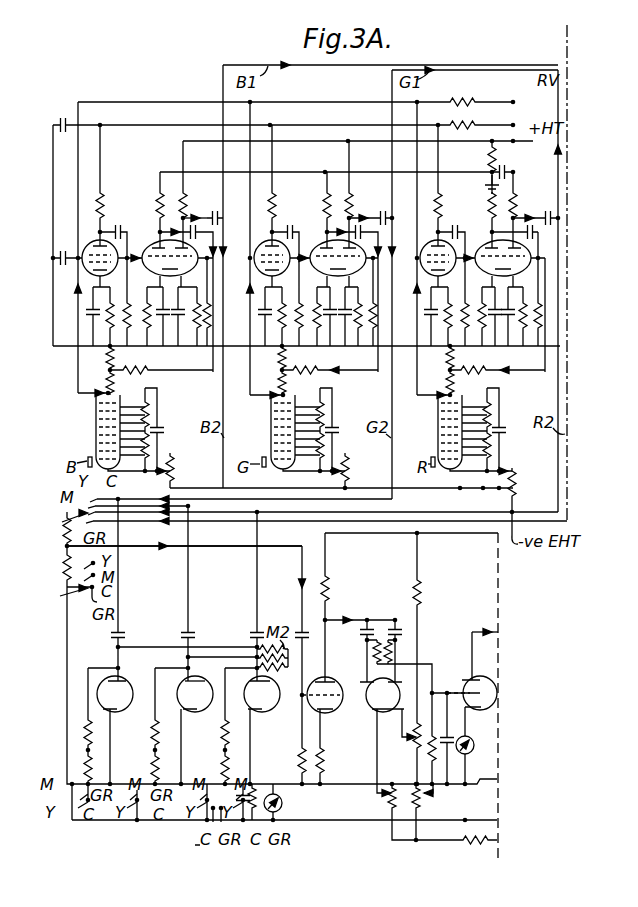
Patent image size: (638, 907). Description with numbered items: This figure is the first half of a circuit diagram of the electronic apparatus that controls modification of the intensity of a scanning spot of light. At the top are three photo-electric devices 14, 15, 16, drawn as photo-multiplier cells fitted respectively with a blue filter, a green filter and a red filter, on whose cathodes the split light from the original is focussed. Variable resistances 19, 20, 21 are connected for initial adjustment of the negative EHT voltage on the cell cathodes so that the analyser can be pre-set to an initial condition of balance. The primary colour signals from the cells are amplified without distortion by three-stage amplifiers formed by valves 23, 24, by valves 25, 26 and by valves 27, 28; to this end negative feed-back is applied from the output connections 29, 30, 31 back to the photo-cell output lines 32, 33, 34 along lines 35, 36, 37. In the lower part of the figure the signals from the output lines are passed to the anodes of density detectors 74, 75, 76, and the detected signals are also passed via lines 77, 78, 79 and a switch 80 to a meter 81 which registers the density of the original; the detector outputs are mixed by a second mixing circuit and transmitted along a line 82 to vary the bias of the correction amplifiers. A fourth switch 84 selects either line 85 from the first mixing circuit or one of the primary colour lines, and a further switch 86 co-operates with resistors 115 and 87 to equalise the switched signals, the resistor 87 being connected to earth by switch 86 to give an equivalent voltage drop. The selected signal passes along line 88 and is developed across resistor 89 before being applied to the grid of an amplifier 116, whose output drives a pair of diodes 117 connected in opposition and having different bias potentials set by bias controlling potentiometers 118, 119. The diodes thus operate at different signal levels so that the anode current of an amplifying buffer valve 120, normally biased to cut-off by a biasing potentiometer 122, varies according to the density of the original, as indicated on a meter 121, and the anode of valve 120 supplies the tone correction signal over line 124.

The photo-electric device 14 is at (96, 424).
The photo-electric device 15 is at (271, 427).
The photo-electric device 16 is at (439, 427).
The variable resistance 19 is at (181, 470).
The variable resistance 20 is at (358, 470).
The variable resistance 21 is at (514, 486).
The amplifier 23 is at (102, 230).
The amplifier 24 is at (154, 246).
The amplifier 25 is at (259, 253).
The amplifier 26 is at (328, 250).
The amplifier 27 is at (422, 251).
The amplifier 28 is at (488, 249).
The output connection 29 is at (187, 218).
The output connection 30 is at (351, 218).
The output connection 31 is at (517, 216).
The photo-cell output line 32 is at (78, 360).
The photo-cell output line 33 is at (250, 380).
The photo-cell output line 34 is at (419, 368).
The feed-back line 35 is at (174, 372).
The feed-back line 36 is at (362, 370).
The feed-back line 37 is at (531, 378).
The density detector 74 is at (121, 679).
The density detector 75 is at (198, 688).
The density detector 76 is at (254, 710).
The line 77 is at (88, 675).
The line 78 is at (155, 674).
The line 79 is at (218, 712).
The switch 80 is at (208, 834).
The meter 81 is at (283, 808).
The line 82 is at (289, 668).
The switch 84 is at (63, 517).
The line 85 is at (268, 525).
The switch 86 is at (67, 582).
The resistor 87 is at (67, 563).
The line 88 is at (217, 541).
The resistor 89 is at (299, 758).
The resistor 115 is at (67, 535).
The amplifier 116 is at (330, 680).
The pair of diodes 117 is at (375, 710).
The bias controlling potentiometer 118 is at (379, 793).
The bias controlling potentiometer 119 is at (413, 743).
The amplifying buffer valve 120 is at (473, 677).
The meter 121 is at (472, 744).
The biasing potentiometer 122 is at (433, 793).
The line 124 is at (496, 632).